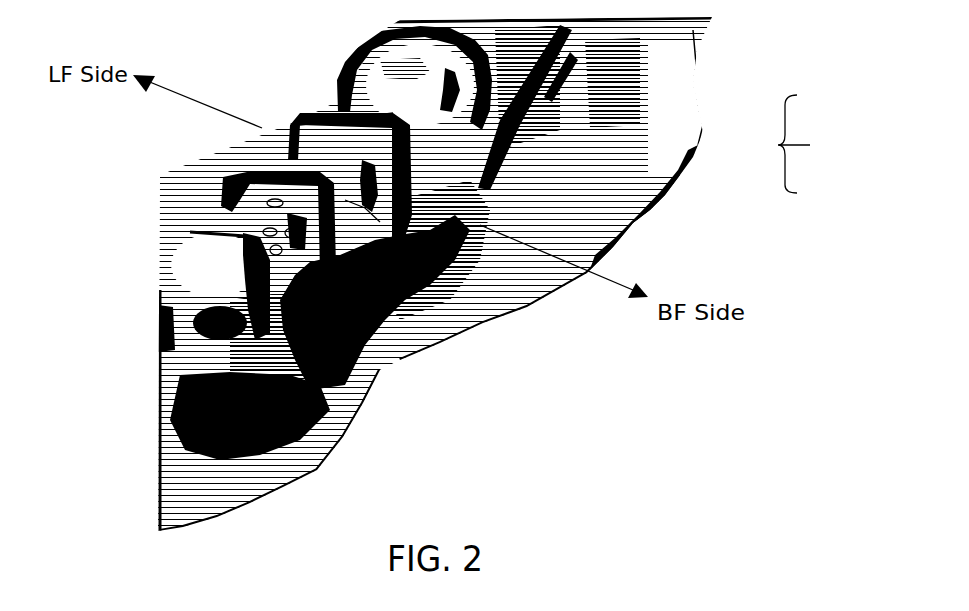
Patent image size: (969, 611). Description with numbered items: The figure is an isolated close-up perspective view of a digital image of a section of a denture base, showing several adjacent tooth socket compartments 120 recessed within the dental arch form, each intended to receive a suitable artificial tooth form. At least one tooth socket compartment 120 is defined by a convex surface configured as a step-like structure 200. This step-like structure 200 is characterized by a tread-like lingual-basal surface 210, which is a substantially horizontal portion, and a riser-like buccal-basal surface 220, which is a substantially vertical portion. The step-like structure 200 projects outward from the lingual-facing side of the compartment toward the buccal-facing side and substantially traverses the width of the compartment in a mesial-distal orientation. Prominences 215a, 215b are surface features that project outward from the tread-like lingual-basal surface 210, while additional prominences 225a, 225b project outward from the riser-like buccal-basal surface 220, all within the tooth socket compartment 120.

The tooth socket compartment 120 is at (487, 70).
The step-like structure 200 is at (817, 144).
The tread-like lingual-basal surface 210 is at (310, 157).
The riser-like buccal-basal surface 220 is at (355, 206).
The prominence 215a is at (265, 203).
The prominence 215b is at (263, 230).
The prominence 225a is at (297, 230).
The prominence 225b is at (280, 247).